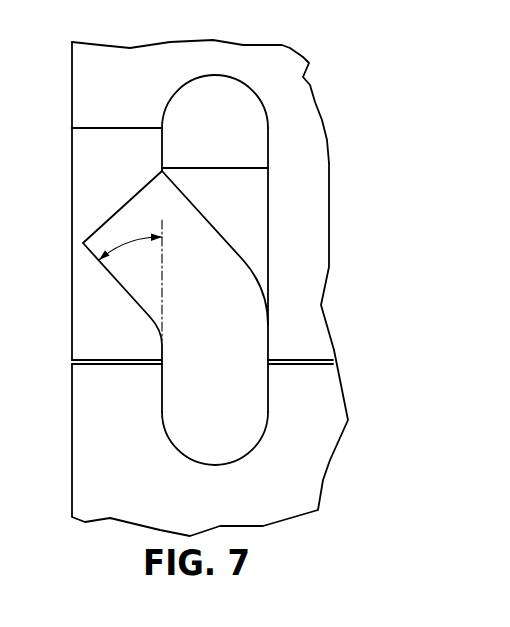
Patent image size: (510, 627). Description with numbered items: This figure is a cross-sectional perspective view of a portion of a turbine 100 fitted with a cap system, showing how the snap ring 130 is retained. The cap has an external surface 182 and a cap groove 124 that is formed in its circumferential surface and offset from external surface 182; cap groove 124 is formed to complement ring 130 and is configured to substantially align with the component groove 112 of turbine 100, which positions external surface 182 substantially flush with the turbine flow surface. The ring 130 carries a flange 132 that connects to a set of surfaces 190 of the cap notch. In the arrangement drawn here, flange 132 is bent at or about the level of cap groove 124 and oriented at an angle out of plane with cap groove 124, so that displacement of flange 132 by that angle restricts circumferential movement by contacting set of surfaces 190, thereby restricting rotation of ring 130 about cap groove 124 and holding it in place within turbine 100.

The external surface 182 is at (147, 83).
The set of surfaces 190 is at (123, 173).
The cap groove 124 is at (237, 163).
The ring 130 is at (247, 228).
The flange 132 is at (227, 326).
The turbine 100 is at (134, 458).
The component groove 112 is at (262, 433).